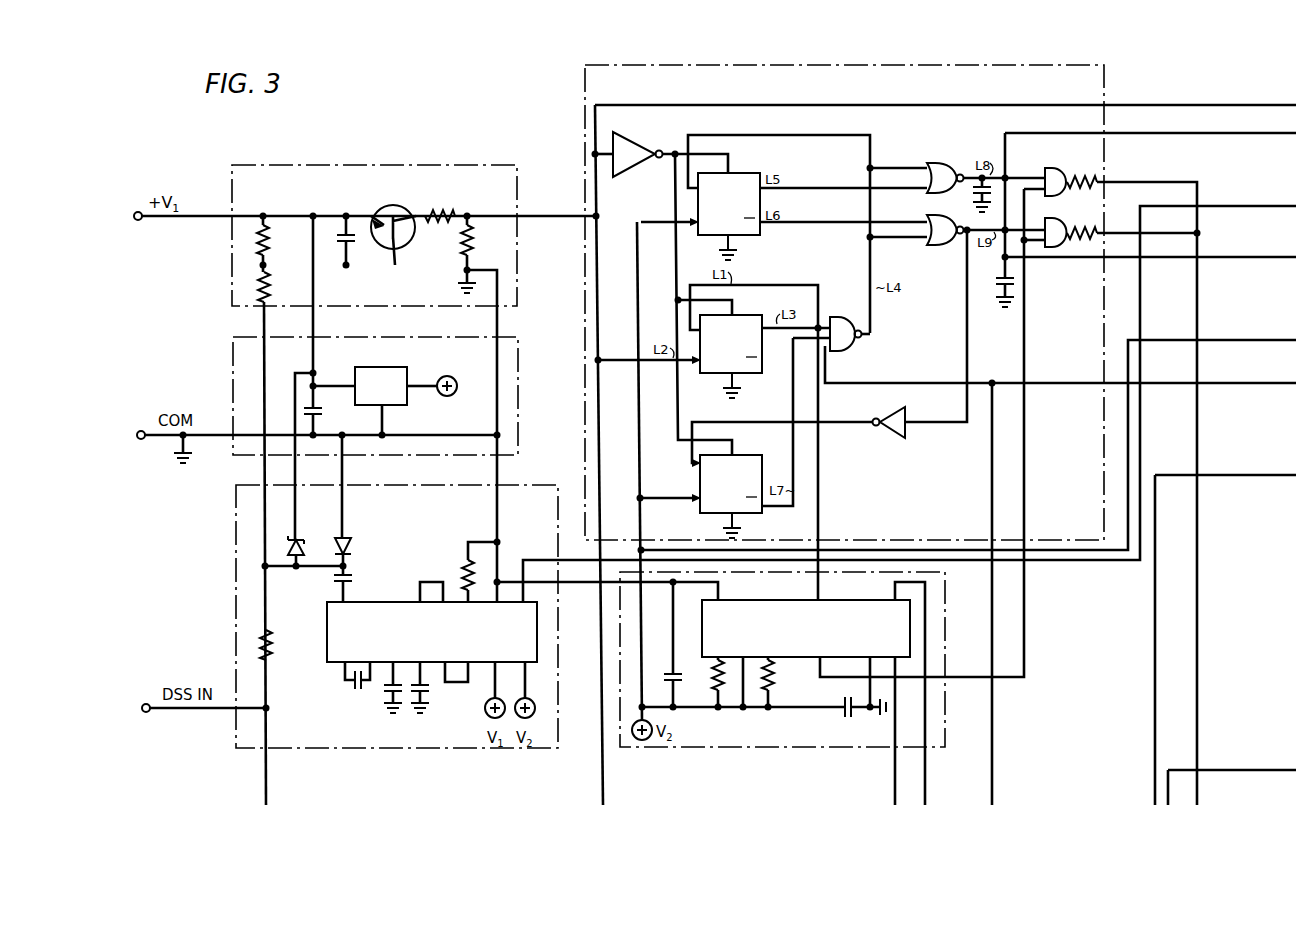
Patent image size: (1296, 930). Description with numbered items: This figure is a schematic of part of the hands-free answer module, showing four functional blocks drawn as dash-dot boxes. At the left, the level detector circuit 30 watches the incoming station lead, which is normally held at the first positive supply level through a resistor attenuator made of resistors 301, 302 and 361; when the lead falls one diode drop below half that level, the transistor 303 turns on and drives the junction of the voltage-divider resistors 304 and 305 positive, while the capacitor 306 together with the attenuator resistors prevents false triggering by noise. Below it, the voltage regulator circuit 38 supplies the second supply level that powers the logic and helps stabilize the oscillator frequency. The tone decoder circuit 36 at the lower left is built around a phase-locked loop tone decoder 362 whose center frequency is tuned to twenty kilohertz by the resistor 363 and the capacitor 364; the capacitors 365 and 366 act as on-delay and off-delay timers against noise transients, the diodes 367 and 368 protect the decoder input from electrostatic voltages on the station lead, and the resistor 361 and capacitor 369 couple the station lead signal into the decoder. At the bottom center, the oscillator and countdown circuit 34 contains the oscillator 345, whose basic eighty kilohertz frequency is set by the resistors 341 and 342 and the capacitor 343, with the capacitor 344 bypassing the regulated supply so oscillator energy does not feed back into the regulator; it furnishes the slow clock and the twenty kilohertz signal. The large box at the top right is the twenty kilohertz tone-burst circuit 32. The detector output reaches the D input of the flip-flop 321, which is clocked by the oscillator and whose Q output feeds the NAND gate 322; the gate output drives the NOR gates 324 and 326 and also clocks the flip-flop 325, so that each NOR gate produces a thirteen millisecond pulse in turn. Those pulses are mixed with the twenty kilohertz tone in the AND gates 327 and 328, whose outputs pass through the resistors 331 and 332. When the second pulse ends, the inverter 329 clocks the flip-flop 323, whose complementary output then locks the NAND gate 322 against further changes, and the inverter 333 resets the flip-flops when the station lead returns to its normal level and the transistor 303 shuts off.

The level detector circuit 30 is at (430, 196).
The resistor 301 is at (278, 240).
The resistor 302 is at (279, 283).
The transistor 303 is at (399, 241).
The resistor 304 is at (429, 214).
The resistor 305 is at (482, 249).
The capacitor 306 is at (360, 240).
The voltage regulator circuit 38 is at (490, 358).
The tone decoder circuit 36 is at (497, 513).
The resistor 361 is at (281, 645).
The phase-locked loop tone decoder 362 is at (398, 603).
The resistor 363 is at (464, 574).
The capacitor 364 is at (351, 683).
The capacitor 365 is at (428, 690).
The capacitor 366 is at (383, 690).
The diode 367 is at (303, 549).
The diode 368 is at (348, 548).
The capacitor 369 is at (328, 586).
The 20 kHz tone-burst circuit 32 is at (915, 89).
The flip-flop 321 is at (743, 317).
The NAND gate 322 is at (842, 318).
The flip-flop 323 is at (743, 459).
The NOR gate 324 is at (944, 168).
The flip-flop 325 is at (743, 175).
The NOR gate 326 is at (942, 221).
The AND gate 327 is at (1051, 172).
The AND gate 328 is at (1051, 224).
The inverter 329 is at (892, 418).
The resistor 331 is at (1083, 172).
The resistor 332 is at (1083, 223).
The inverter 333 is at (637, 146).
The oscillator and countdown circuit 34 is at (830, 738).
The resistor 341 is at (713, 683).
The resistor 342 is at (786, 682).
The capacitor 343 is at (664, 680).
The capacitor 344 is at (859, 697).
The oscillator 345 is at (789, 604).